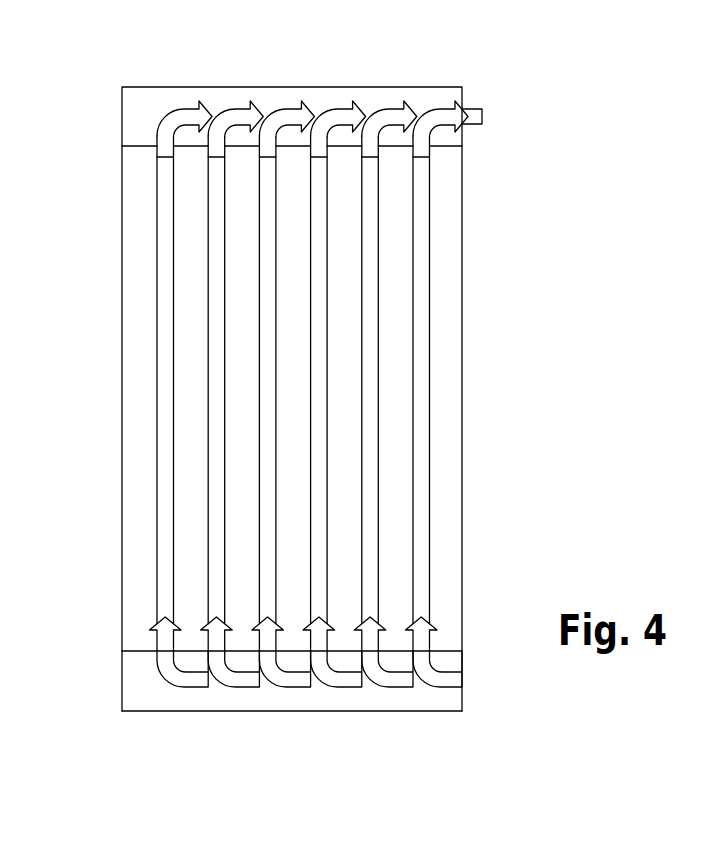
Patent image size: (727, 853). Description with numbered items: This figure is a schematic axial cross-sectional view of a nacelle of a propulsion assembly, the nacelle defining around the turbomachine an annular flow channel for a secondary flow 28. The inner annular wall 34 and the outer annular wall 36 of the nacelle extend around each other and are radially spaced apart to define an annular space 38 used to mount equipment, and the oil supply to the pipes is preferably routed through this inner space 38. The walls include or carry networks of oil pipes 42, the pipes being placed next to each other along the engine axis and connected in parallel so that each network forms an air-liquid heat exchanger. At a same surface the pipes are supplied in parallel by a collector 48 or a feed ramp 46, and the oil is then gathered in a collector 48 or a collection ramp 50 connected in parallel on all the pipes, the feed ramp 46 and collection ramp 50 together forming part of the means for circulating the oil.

The secondary flow 28 is at (168, 75).
The inner annular wall 34 is at (138, 650).
The outer annular wall 36 is at (145, 712).
The annular space 38 is at (138, 683).
The pipes 42 is at (370, 377).
The feed ramp 46 is at (372, 688).
The collector 48 is at (292, 397).
The collection ramp 50 is at (363, 111).